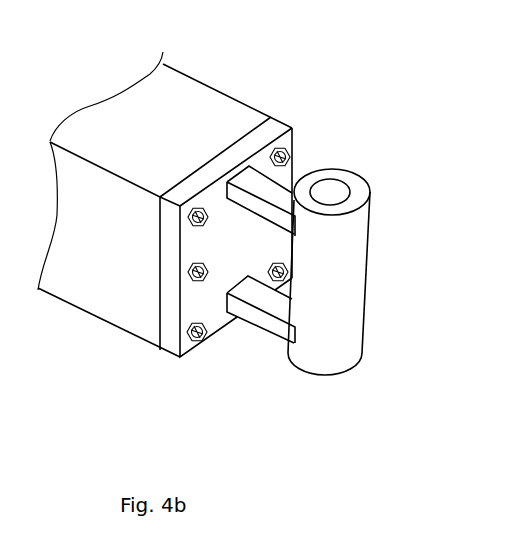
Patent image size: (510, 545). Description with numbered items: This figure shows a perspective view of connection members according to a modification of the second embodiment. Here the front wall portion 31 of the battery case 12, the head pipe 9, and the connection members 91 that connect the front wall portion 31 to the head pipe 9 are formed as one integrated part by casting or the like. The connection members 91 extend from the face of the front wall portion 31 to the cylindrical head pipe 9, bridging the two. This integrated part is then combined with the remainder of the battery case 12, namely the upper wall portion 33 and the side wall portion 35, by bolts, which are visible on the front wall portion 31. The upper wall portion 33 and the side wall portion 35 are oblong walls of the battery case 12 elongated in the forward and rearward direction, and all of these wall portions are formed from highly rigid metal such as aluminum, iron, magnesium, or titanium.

The battery case 12 is at (178, 71).
The upper wall portion 33 is at (232, 110).
The front wall portion 31 is at (282, 119).
The left side wall portion 35 is at (118, 292).
The connection member 91 is at (273, 185).
The head pipe 9 is at (357, 283).